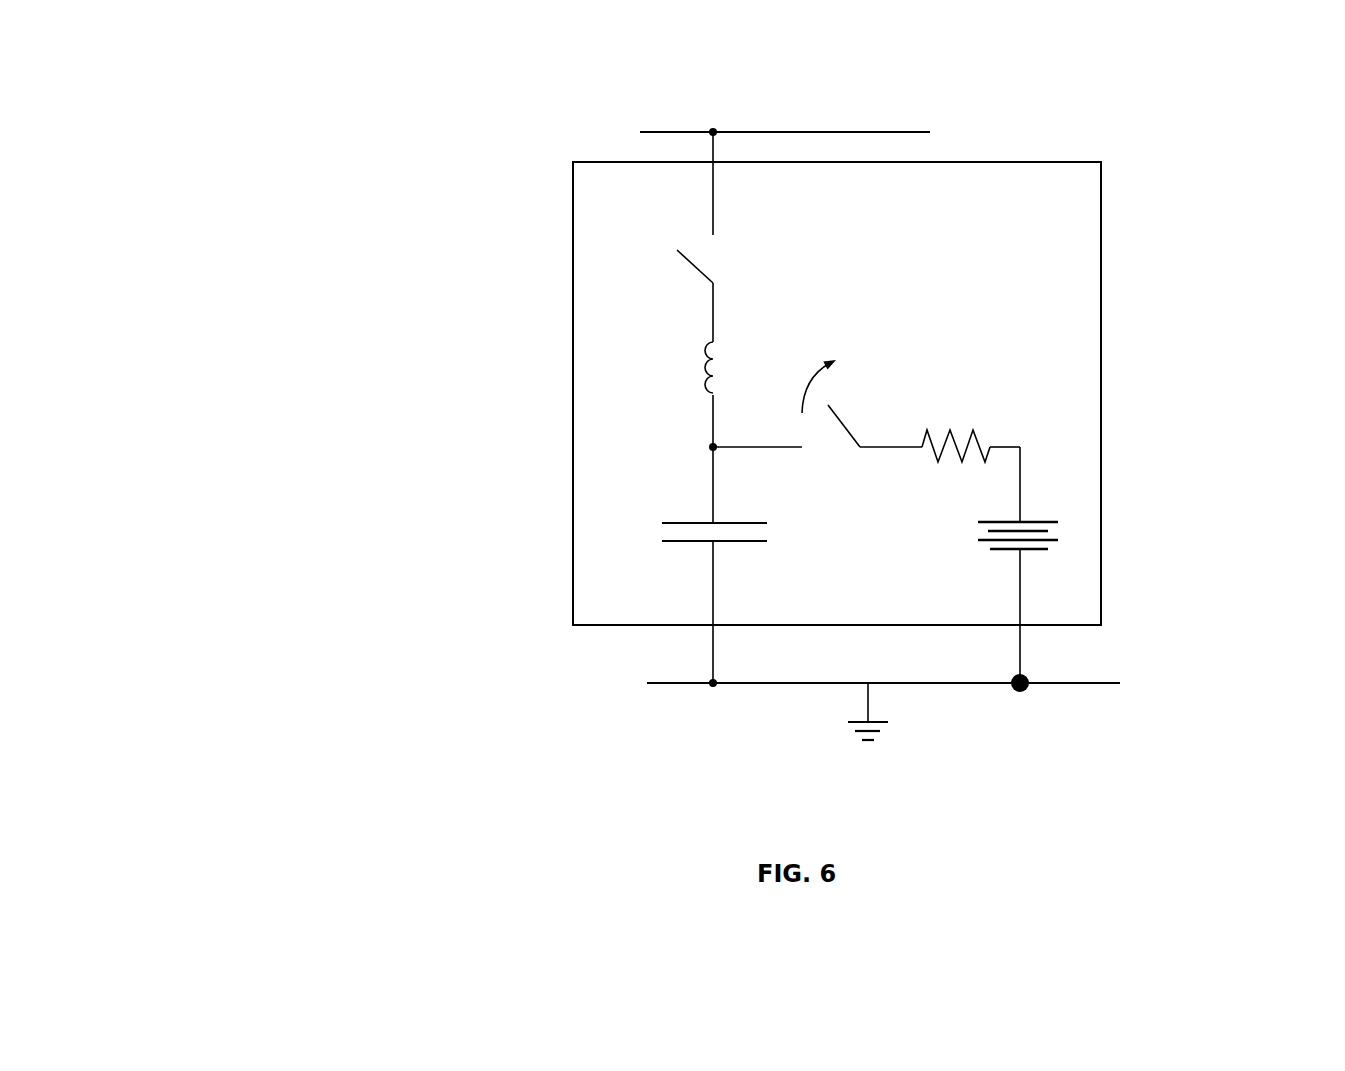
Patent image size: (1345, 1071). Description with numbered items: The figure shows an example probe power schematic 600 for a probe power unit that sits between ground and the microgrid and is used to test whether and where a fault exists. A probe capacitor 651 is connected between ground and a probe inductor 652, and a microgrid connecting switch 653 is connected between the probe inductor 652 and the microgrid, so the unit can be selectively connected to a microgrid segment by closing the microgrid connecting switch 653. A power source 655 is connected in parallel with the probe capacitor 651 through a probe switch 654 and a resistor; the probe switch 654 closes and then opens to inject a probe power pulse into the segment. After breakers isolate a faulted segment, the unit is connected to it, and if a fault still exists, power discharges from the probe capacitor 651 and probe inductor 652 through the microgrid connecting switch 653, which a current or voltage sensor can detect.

The probe power unit circuit 600 is at (215, 58).
The probe capacitor 651 is at (595, 537).
The probe inductor 652 is at (625, 380).
The microgrid connecting switch 653 is at (612, 273).
The probe switch 654 is at (888, 380).
The power source 655 is at (1068, 527).